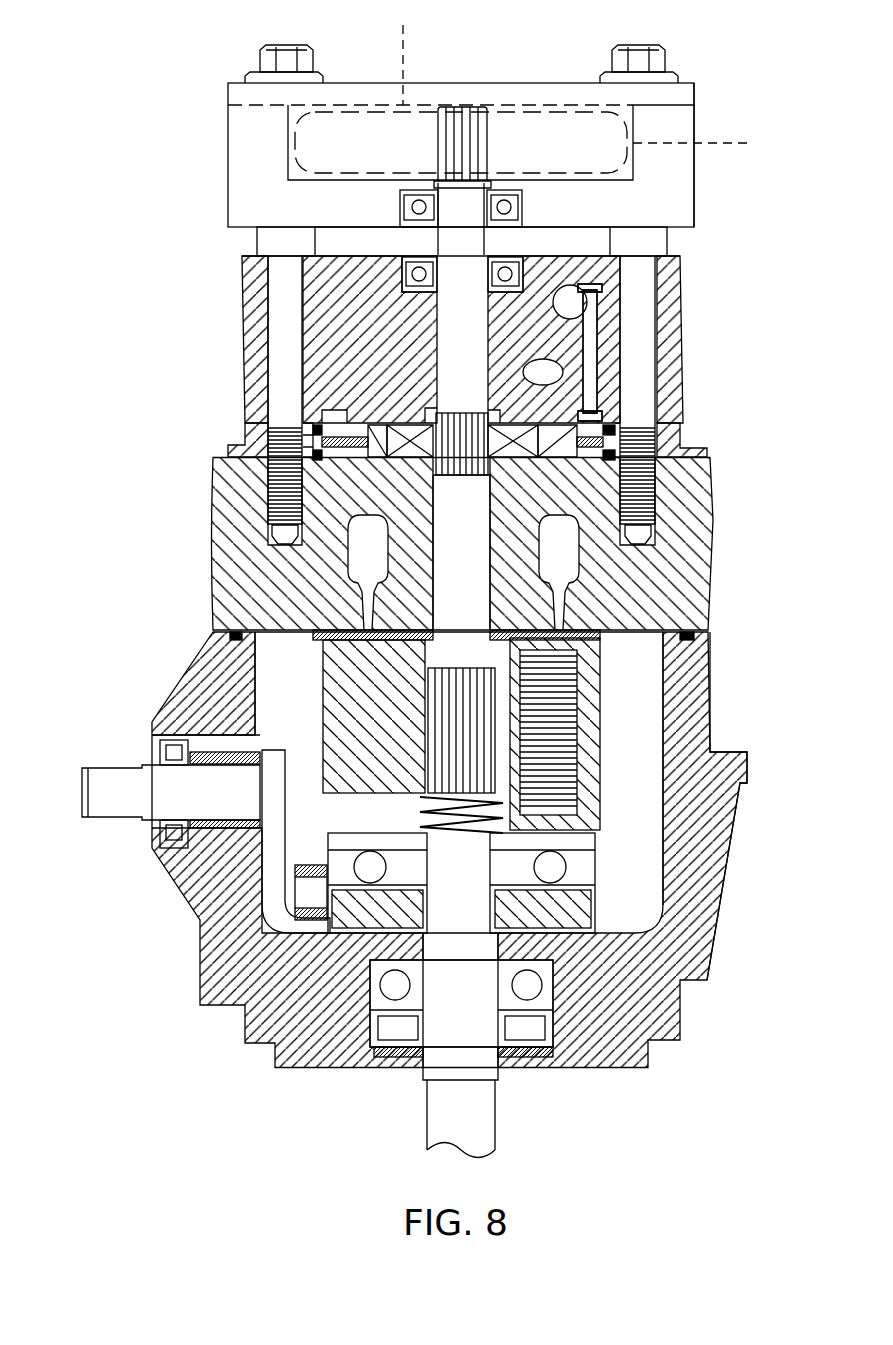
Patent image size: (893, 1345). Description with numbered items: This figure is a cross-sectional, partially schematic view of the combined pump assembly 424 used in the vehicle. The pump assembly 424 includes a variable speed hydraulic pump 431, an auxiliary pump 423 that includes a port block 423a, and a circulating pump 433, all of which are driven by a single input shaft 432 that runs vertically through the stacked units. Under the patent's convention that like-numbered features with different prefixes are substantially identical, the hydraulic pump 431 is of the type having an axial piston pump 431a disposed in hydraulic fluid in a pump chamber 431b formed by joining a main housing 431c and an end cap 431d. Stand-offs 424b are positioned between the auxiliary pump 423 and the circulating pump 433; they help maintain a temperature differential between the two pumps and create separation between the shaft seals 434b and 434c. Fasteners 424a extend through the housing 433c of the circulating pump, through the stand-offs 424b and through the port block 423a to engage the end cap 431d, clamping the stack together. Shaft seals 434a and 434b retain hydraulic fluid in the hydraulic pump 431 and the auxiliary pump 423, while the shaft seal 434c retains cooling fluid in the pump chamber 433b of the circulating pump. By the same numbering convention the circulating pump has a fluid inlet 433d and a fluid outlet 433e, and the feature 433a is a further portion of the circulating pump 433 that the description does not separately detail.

The pump assembly 424 is at (110, 84).
The fasteners 424a is at (288, 43).
The stand-offs 424b is at (258, 240).
The circulating pump 433 is at (194, 136).
The plate opening 433a is at (553, 112).
The pump chamber 433b is at (588, 177).
The housing 433c is at (694, 122).
The vertical axis 433d is at (405, 44).
The horizontal axis 433e is at (735, 146).
The shaft seal 434a is at (525, 1043).
The shaft seal 434b is at (507, 257).
The shaft seal 434c is at (404, 210).
The auxiliary pump 423 is at (186, 356).
The port block 423a is at (676, 341).
The variable speed hydraulic pump 431 is at (146, 658).
The cavity 431a is at (284, 721).
The cavity 431b is at (627, 723).
The housing wall 431c is at (710, 838).
The end cap 431d is at (688, 574).
The input shaft 432 is at (498, 1132).